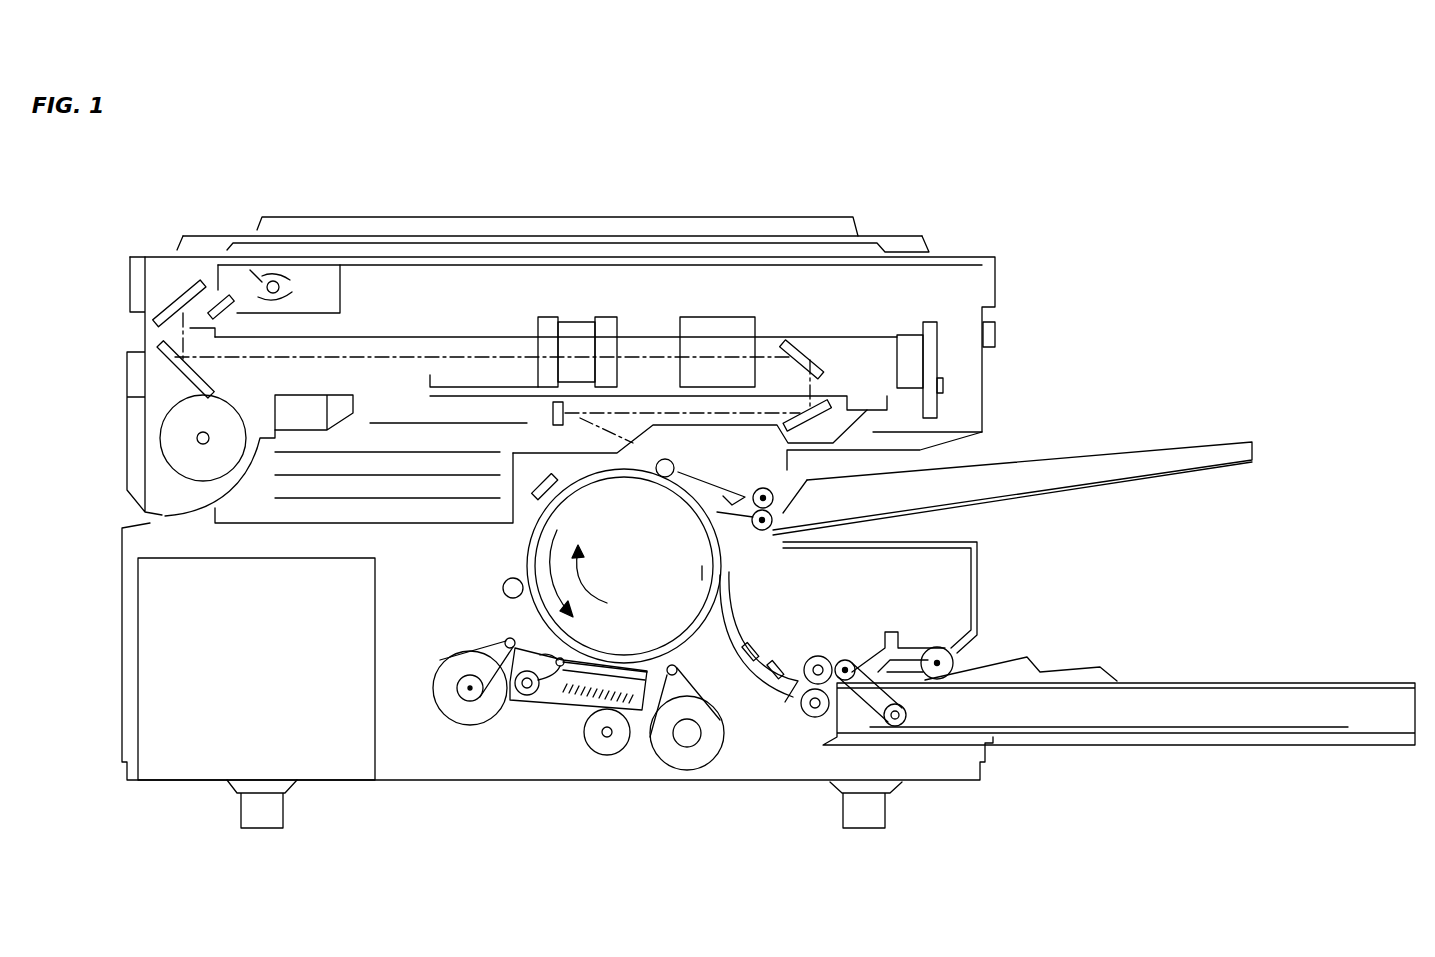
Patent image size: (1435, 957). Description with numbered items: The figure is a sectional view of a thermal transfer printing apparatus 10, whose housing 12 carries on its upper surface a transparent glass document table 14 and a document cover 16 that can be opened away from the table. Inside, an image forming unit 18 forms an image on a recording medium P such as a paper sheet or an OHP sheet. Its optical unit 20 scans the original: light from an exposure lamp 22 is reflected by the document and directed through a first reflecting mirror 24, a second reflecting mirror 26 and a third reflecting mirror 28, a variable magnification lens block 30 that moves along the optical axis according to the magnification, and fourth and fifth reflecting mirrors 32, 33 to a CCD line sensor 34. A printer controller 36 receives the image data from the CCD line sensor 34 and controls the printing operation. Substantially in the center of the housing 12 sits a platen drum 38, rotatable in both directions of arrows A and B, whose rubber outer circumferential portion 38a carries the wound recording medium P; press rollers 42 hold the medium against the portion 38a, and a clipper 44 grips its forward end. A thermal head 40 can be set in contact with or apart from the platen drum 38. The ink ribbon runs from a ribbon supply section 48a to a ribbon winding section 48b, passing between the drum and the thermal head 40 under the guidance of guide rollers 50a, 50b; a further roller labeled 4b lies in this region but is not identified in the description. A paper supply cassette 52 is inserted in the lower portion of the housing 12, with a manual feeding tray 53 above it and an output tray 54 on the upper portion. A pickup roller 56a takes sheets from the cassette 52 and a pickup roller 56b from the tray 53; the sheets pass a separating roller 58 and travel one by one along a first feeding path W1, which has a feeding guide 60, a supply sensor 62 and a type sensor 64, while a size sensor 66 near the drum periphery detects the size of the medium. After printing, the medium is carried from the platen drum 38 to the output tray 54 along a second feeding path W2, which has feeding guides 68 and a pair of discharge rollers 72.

The thermal transfer printing apparatus 10 is at (623, 187).
The housing 12 is at (985, 373).
The document table 14 is at (302, 257).
The document cover 16 is at (273, 226).
The image forming unit 18 is at (748, 288).
The optical unit 20 is at (167, 273).
The exposure lamp 22 is at (248, 268).
The first reflecting mirror 24 is at (223, 313).
The second reflecting mirror 26 is at (167, 307).
The third reflecting mirror 28 is at (180, 372).
The variable magnification lens block 30 is at (582, 317).
The fourth reflecting mirror 32 is at (805, 355).
The fifth reflecting mirror 33 is at (817, 410).
The CCD line sensor 34 is at (553, 410).
The printer controller 36 is at (403, 482).
The platen drum 38 is at (528, 553).
The outer circumferential portion 38a is at (677, 495).
The thermal head 40 is at (553, 692).
The press rollers 42 is at (662, 460).
The clipper 44 is at (702, 573).
The ribbon supply section 48a is at (693, 757).
The ribbon winding section 48b is at (468, 727).
The roller 4b is at (650, 733).
The guide roller 50a is at (678, 670).
The guide roller 50b is at (510, 638).
The paper supply cassette 52 is at (1202, 700).
The manual feeding tray 53 is at (1018, 653).
The output tray 54 is at (1160, 450).
The pickup roller 56a is at (900, 727).
The pickup roller 56b is at (843, 660).
The separating roller 58 is at (801, 712).
The feeding guide 60 is at (778, 650).
The supply sensor 62 is at (782, 655).
The type sensor 64 is at (758, 645).
The size sensor 66 is at (547, 478).
The feeding guides 68 is at (698, 482).
The discharge rollers 72 is at (764, 487).
The first feeding path W1 is at (755, 677).
The second feeding path W2 is at (743, 500).
The recording medium P is at (1258, 730).
The arrow A is at (572, 579).
The arrow B is at (589, 567).